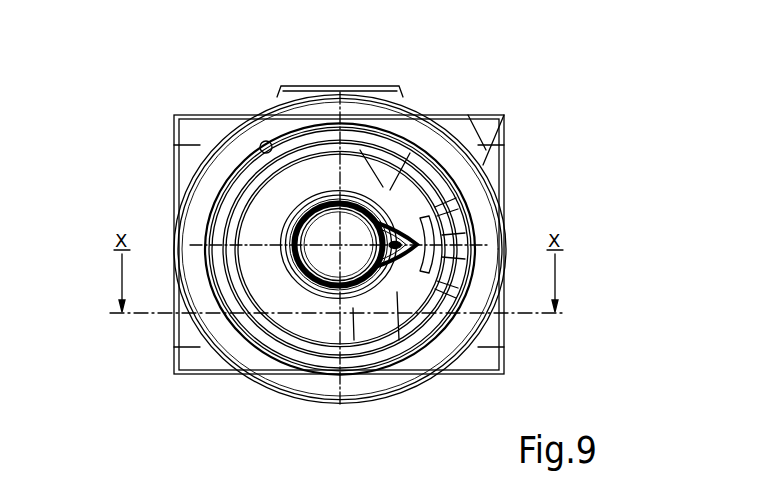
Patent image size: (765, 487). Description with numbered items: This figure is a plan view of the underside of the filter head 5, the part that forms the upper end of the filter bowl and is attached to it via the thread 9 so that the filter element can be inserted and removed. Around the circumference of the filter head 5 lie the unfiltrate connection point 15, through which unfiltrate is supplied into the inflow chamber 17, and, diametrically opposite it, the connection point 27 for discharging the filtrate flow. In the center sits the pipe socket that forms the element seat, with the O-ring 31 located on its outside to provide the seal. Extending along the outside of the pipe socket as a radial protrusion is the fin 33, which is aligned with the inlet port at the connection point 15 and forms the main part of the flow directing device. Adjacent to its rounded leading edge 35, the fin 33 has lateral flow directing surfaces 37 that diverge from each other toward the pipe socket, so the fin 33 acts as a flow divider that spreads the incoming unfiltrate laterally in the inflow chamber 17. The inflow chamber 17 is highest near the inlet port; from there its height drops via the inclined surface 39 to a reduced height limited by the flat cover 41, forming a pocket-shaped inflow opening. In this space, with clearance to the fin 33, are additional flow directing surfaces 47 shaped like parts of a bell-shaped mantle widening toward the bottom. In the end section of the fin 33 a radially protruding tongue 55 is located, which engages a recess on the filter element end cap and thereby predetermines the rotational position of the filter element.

The filter head 5 is at (592, 194).
The thread 9 is at (272, 135).
The unfiltrate connection point 15 is at (506, 216).
The inflow chamber 17 is at (400, 320).
The connection point 27 is at (172, 212).
The O-ring 31 is at (310, 193).
The fin 33 is at (470, 165).
The rounded leading edge 35 is at (455, 250).
The lateral flow directing surfaces 37 is at (504, 398).
The inclined surface 39 is at (376, 197).
The flat cover 41 is at (327, 322).
The additional flow directing surfaces 47 is at (425, 140).
The tongue 55 is at (382, 245).